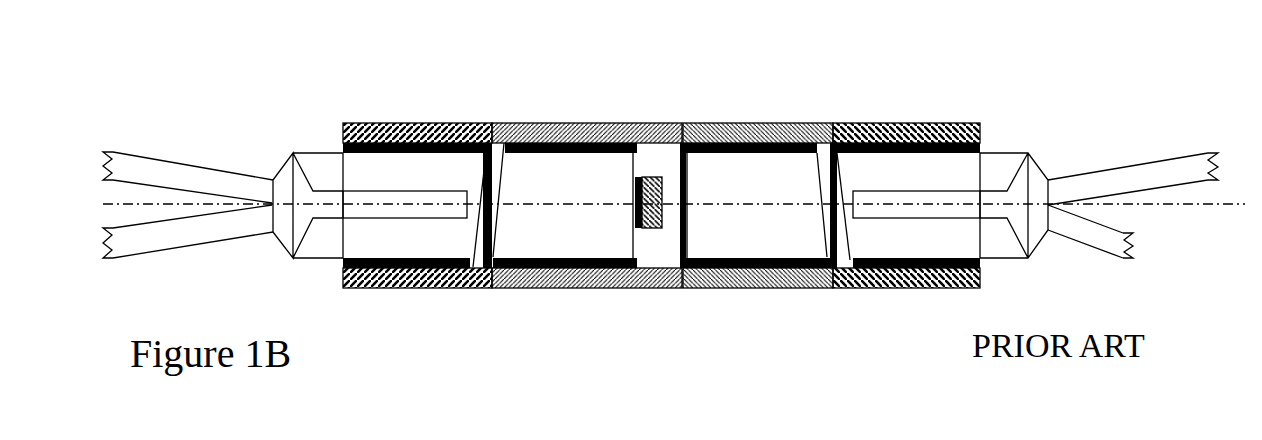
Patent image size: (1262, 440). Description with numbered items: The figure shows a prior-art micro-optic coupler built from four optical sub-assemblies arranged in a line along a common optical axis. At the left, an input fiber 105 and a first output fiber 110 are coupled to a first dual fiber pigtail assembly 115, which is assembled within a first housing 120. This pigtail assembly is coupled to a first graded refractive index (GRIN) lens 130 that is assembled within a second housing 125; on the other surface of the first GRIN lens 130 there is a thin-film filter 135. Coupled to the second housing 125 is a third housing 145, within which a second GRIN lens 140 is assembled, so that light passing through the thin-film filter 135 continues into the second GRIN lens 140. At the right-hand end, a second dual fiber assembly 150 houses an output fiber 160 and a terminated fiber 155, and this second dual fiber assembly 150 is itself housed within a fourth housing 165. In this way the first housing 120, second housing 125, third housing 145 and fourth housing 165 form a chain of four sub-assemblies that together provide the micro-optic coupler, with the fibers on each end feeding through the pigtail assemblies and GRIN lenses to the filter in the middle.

The input fiber 105 is at (153, 177).
The first output fiber 110 is at (228, 220).
The first dual fiber pigtail assembly 115 is at (382, 162).
The first housing 120 is at (440, 123).
The second housing 125 is at (516, 125).
The first graded refractive index (GRIN) lens 130 is at (563, 177).
The thin-film filter 135 is at (653, 177).
The second GRIN lens 140 is at (728, 177).
The third housing 145 is at (792, 123).
The second dual fiber assembly 150 is at (892, 177).
The terminated fiber 155 is at (1092, 232).
The output fiber 160 is at (1163, 175).
The fourth housing 165 is at (960, 123).